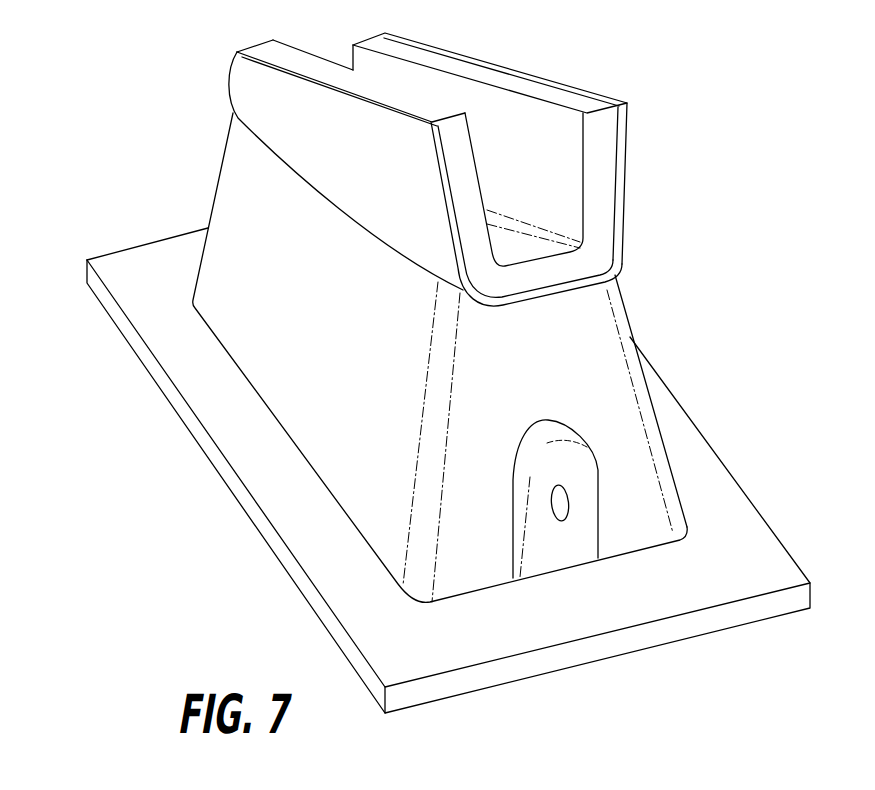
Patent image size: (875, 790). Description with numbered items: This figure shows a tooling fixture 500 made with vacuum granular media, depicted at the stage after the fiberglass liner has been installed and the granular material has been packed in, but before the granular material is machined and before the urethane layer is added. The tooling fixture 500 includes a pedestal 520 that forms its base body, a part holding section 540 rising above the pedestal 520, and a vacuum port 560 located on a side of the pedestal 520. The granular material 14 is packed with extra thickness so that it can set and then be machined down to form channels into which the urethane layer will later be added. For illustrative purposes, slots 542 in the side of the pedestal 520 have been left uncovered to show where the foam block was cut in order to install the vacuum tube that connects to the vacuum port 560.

The tooling fixture 500 is at (145, 116).
The pedestal 520 is at (316, 285).
The part holding section 540 is at (364, 165).
The granular material 14 is at (603, 182).
The slots 542 is at (577, 353).
The vacuum port 560 is at (568, 503).